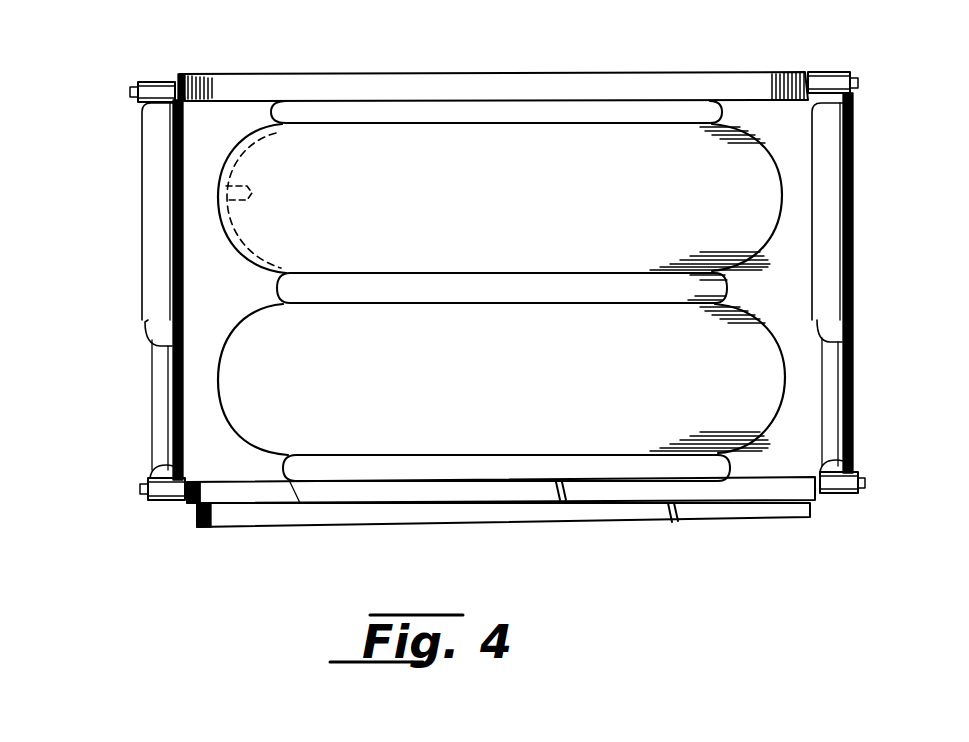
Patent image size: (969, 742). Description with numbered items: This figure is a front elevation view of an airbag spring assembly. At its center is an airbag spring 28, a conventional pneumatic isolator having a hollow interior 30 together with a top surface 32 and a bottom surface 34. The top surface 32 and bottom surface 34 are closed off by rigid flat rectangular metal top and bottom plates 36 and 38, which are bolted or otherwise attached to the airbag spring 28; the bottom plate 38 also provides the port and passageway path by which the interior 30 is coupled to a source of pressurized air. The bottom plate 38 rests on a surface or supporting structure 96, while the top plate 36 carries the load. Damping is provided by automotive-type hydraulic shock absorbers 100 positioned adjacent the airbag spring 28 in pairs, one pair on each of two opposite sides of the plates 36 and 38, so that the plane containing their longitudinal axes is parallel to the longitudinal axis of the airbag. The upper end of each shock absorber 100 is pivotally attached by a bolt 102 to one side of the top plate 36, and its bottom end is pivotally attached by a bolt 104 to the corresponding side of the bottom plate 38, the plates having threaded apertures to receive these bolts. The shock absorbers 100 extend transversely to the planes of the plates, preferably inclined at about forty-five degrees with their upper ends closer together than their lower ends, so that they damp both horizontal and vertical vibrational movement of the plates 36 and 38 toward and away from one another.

The airbag spring 28 is at (220, 168).
The hollow interior 30 is at (226, 192).
The top surface 32 is at (500, 96).
The bottom surface 34 is at (455, 490).
The top plate 36 is at (405, 78).
The bottom plate 38 is at (293, 495).
The supporting structure 96 is at (690, 505).
The shock absorber 100 is at (143, 283).
The bolt 102 is at (130, 91).
The bolt 104 is at (140, 489).